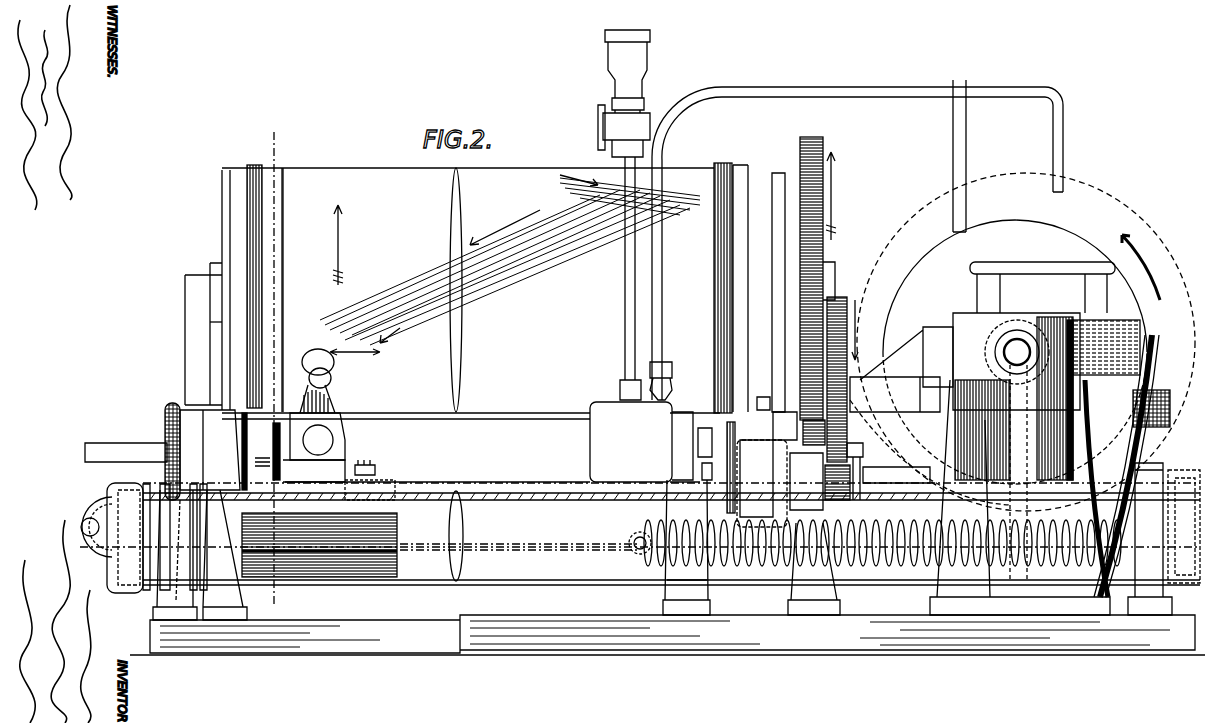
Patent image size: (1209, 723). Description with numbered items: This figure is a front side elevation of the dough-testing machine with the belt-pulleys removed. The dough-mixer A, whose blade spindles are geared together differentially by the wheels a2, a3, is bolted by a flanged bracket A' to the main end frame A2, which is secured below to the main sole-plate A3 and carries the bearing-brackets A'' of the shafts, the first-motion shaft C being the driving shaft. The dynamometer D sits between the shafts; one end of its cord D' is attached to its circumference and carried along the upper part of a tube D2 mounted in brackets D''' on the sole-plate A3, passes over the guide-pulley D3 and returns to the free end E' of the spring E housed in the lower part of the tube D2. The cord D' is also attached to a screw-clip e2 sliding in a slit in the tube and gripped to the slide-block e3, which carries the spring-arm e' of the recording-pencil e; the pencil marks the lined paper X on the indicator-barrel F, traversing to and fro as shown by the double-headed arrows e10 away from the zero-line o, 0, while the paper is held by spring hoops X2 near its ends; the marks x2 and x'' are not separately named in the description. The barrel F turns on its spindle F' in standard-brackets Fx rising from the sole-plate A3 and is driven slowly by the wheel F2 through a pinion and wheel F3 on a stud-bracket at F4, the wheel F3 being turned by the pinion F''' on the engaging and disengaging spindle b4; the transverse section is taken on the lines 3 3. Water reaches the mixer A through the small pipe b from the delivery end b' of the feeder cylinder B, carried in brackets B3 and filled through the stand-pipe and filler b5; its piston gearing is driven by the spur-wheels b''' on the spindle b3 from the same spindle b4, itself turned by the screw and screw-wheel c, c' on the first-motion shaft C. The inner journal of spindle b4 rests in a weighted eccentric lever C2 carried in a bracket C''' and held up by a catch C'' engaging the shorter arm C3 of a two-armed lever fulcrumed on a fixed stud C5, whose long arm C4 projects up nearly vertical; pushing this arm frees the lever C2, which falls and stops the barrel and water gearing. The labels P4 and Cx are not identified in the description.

The indicator-barrel F is at (480, 323).
The zero-line o is at (288, 290).
The section line 3 is at (278, 365).
The spring hoops X2 is at (252, 262).
The barrel spindle F' is at (518, 327).
The standard-brackets Fx is at (209, 323).
The diagram-sheet X is at (495, 361).
The spray band x2 is at (510, 261).
The spray x'' is at (690, 181).
The double-headed arrows e10 is at (489, 259).
The recording-pencil e is at (313, 375).
The spring-arm e' is at (302, 381).
The zero-line 0 is at (289, 398).
The water-cylinder B is at (378, 442).
The brackets B3 is at (429, 451).
The slide-block e3 is at (335, 478).
The screw-clip e2 is at (378, 486).
The stand-pipe and filler b5 is at (624, 320).
The small pipe b is at (865, 240).
The delivery end b' is at (675, 381).
The long arm C4 is at (782, 237).
The wheel F2 is at (820, 233).
The fixed stud C5 is at (764, 388).
The shorter arm C3 is at (790, 428).
The pinion P4 is at (810, 433).
The stud-bracket F4 is at (895, 388).
The wheel F3 is at (859, 469).
The pinion F''' is at (849, 486).
The disengaging transmitting-spindle b4 is at (905, 475).
The transmitting-spindle b3 is at (726, 440).
The spur-wheels b''' is at (727, 467).
The weighted eccentric bearing-lever C2 is at (762, 483).
The bracket C''' is at (806, 488).
The dynamometer D is at (1026, 342).
The dough-mixer A is at (987, 336).
The wheel a2 is at (1025, 335).
The first-motion shaft C is at (1017, 352).
The bearing-brackets A'' is at (985, 352).
The screw c is at (982, 427).
The screw-wheel c' is at (1008, 472).
The wheel a3 is at (1080, 330).
The flanged bracket A' is at (1156, 405).
The arrow Cx is at (1125, 253).
The catch C'' is at (1120, 221).
The cord D' is at (640, 475).
The tube D2 is at (1125, 566).
The guide-pulley D3 is at (95, 545).
The brackets D''' is at (662, 541).
The main sole-plate A3 is at (667, 635).
The main end frame A2 is at (886, 497).
The spring E is at (908, 526).
The free end of spring E' is at (645, 532).